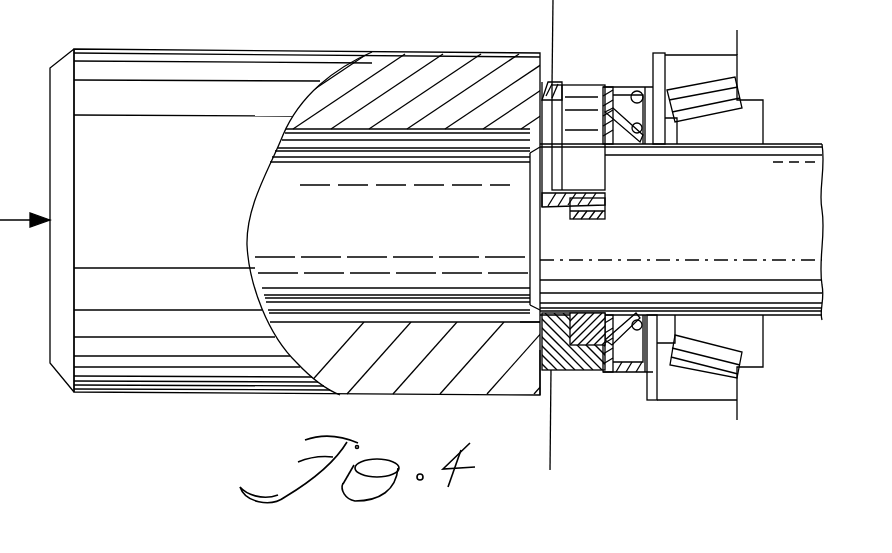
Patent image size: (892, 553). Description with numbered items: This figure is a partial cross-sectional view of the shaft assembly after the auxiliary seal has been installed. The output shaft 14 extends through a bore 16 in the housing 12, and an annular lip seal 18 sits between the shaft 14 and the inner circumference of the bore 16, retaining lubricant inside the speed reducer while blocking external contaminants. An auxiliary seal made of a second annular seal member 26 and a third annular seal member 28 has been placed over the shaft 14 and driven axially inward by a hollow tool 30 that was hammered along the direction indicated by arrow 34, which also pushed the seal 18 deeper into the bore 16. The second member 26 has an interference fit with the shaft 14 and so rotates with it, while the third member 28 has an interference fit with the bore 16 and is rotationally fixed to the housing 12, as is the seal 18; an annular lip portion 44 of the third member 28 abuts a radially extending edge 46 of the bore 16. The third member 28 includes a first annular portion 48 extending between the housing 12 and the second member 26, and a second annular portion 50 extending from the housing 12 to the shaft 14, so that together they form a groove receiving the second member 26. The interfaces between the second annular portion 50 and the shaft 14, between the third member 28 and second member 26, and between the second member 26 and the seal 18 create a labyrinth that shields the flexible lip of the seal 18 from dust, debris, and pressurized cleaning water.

The housing 12 is at (552, 448).
The output shaft 14 is at (786, 144).
The bore 16 is at (640, 83).
The annular seal 18 is at (625, 368).
The second annular seal member 26 is at (606, 200).
The third annular seal member 28 is at (582, 85).
The hollow tool 30 is at (198, 393).
The pressing force direction 34 is at (15, 218).
The annular lip portion 44 is at (553, 365).
The radially extending edge 46 is at (552, 97).
The first annular portion 48 is at (585, 370).
The second annular portion 50 is at (545, 328).